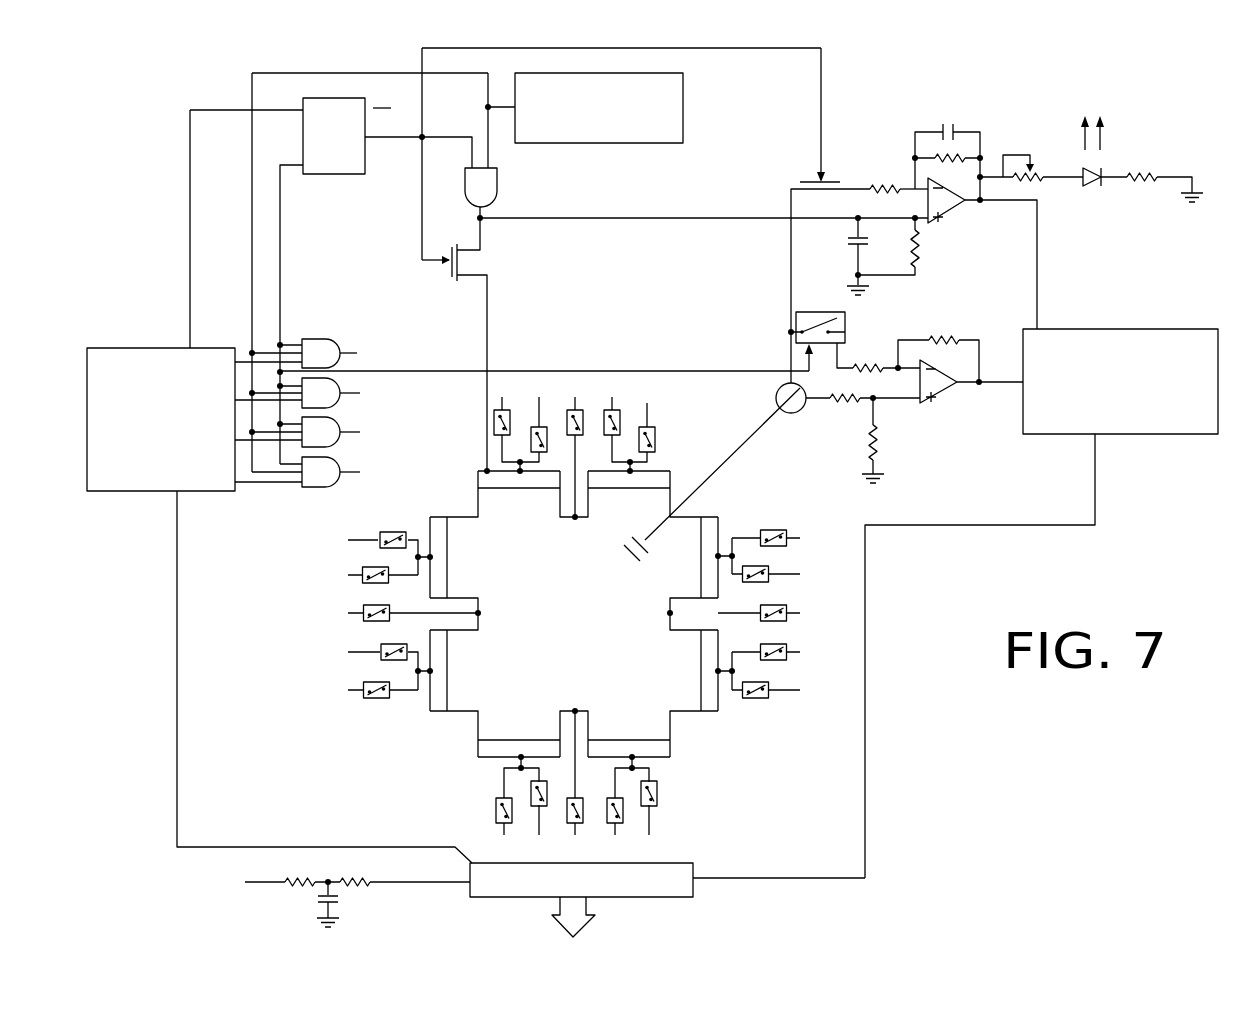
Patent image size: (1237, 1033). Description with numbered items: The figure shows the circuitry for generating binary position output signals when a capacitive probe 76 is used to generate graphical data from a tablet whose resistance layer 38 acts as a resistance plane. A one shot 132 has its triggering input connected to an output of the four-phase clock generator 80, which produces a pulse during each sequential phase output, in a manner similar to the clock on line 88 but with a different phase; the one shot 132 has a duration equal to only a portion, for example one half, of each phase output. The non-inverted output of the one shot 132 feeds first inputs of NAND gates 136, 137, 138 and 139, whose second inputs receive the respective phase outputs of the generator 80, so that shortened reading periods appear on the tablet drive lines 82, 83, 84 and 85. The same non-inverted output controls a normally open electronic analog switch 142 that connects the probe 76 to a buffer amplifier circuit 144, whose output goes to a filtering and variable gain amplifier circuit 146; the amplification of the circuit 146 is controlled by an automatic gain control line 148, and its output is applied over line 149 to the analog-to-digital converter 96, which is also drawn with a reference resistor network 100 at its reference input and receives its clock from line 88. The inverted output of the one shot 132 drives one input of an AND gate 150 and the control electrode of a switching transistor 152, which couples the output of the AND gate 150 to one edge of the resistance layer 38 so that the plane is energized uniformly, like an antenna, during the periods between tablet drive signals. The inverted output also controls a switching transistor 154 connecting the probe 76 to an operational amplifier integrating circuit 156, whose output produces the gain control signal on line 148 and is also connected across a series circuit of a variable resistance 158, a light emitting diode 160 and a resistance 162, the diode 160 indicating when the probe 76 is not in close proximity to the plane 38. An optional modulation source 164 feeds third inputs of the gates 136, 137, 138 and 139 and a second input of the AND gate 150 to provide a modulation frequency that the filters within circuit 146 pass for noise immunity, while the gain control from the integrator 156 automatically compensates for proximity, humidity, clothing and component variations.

The one shot 132 is at (337, 98).
The modulation source 164 is at (633, 143).
The AND gate 150 is at (497, 183).
The switching transistor 152 is at (470, 264).
The switching transistor 154 is at (828, 181).
The operational amplifier integrating circuit 156 is at (952, 193).
The variable resistance 158 is at (1027, 180).
The light emitting diode 160 is at (1093, 185).
The resistance 162 is at (1146, 165).
The automatic gain control line 148 is at (1037, 229).
The normally open electronic analog switch 142 is at (839, 311).
The buffer amplifier circuit 144 is at (946, 371).
The filtering and variable gain amplifier circuit 146 is at (1153, 329).
The line 149 is at (1013, 526).
The four-phase clock generator 80 is at (202, 348).
The NAND gate 136 is at (333, 338).
The NAND gate 137 is at (343, 380).
The NAND gate 138 is at (343, 418).
The NAND gate 139 is at (320, 488).
The tablet drive line 82 is at (346, 352).
The tablet drive line 83 is at (360, 395).
The tablet drive line 84 is at (358, 440).
The tablet drive line 85 is at (357, 473).
The resistance layer 38 is at (683, 527).
The capacitive probe 76 is at (628, 562).
The line 88 is at (178, 590).
The analog-to-digital converter 96 is at (684, 897).
The reference resistor network 100 is at (278, 883).